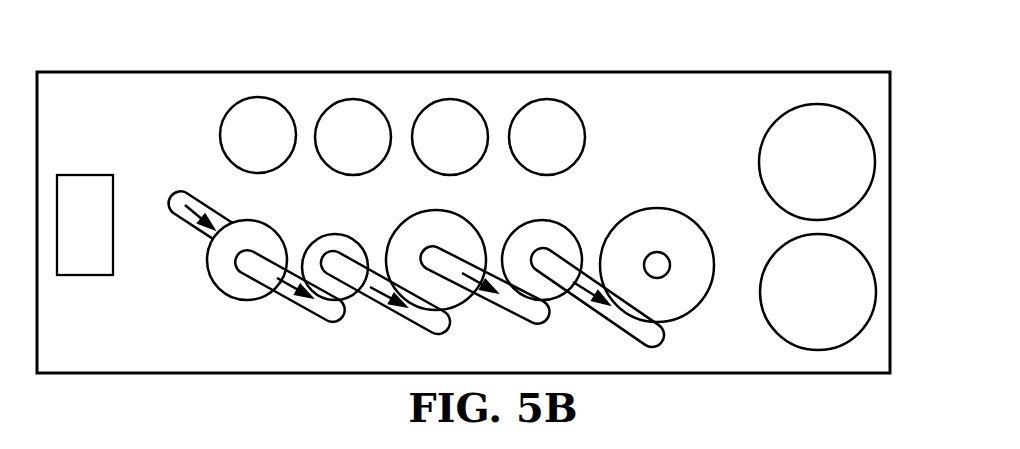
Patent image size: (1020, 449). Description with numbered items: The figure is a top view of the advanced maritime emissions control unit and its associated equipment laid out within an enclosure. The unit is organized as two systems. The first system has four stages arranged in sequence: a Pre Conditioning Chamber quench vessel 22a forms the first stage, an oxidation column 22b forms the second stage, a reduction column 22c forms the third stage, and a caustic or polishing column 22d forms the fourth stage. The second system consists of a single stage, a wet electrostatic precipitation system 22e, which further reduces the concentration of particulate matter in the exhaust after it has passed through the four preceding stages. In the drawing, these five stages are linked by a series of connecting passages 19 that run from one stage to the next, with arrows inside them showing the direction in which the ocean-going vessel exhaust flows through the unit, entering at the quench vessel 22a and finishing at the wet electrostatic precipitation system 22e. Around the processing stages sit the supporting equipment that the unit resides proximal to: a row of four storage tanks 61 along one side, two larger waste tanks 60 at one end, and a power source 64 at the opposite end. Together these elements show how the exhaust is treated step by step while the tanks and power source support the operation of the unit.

The transport path / channel 19 is at (172, 212).
The Pre Conditioning Chamber (PCC) quench vessel 22a is at (265, 246).
The oxidation column 22b is at (341, 247).
The reduction column 22c is at (472, 256).
The caustic (or polishing) column 22d is at (570, 252).
The wet electrostatic precipitation system 22e is at (694, 253).
The waste tanks 60 is at (828, 163).
The storage tanks 61 is at (263, 127).
The power source 64 is at (103, 183).